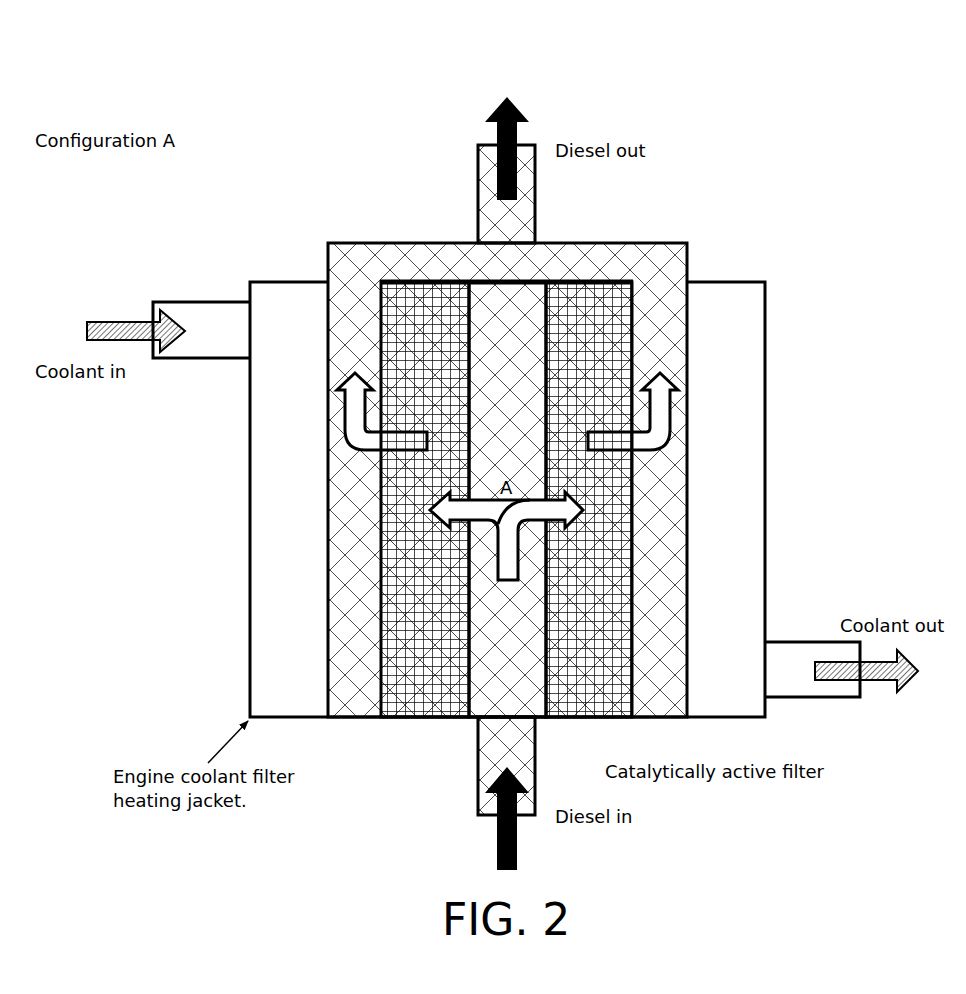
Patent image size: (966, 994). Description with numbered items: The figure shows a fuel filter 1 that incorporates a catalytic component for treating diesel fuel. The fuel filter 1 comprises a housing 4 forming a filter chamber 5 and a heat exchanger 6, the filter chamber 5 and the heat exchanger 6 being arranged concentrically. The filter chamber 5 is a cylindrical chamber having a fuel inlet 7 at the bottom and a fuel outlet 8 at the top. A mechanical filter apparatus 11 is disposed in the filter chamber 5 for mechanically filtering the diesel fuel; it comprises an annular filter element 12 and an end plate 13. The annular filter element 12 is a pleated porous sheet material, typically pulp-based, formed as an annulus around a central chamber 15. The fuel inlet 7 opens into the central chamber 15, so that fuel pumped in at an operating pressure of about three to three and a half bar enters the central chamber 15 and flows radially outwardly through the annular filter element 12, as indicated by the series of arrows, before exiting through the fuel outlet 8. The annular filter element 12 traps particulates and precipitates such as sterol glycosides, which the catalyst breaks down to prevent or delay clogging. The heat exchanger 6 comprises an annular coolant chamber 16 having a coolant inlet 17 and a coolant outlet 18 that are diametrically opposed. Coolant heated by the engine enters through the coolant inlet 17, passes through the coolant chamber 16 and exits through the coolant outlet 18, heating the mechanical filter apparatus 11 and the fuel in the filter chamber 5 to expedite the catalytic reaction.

The fuel filter 1 is at (66, 76).
The housing 4 is at (672, 243).
The filter chamber 5 is at (672, 327).
The heat exchanger 6 is at (208, 273).
The fuel inlet 7 is at (488, 745).
The fuel outlet 8 is at (487, 195).
The mechanical filter apparatus 11 is at (345, 330).
The annular filter element 12 is at (417, 302).
The end plate 13 is at (481, 280).
The central chamber 15 is at (507, 333).
The coolant chamber 16 is at (767, 360).
The coolant inlet 17 is at (157, 311).
The coolant outlet 18 is at (822, 688).